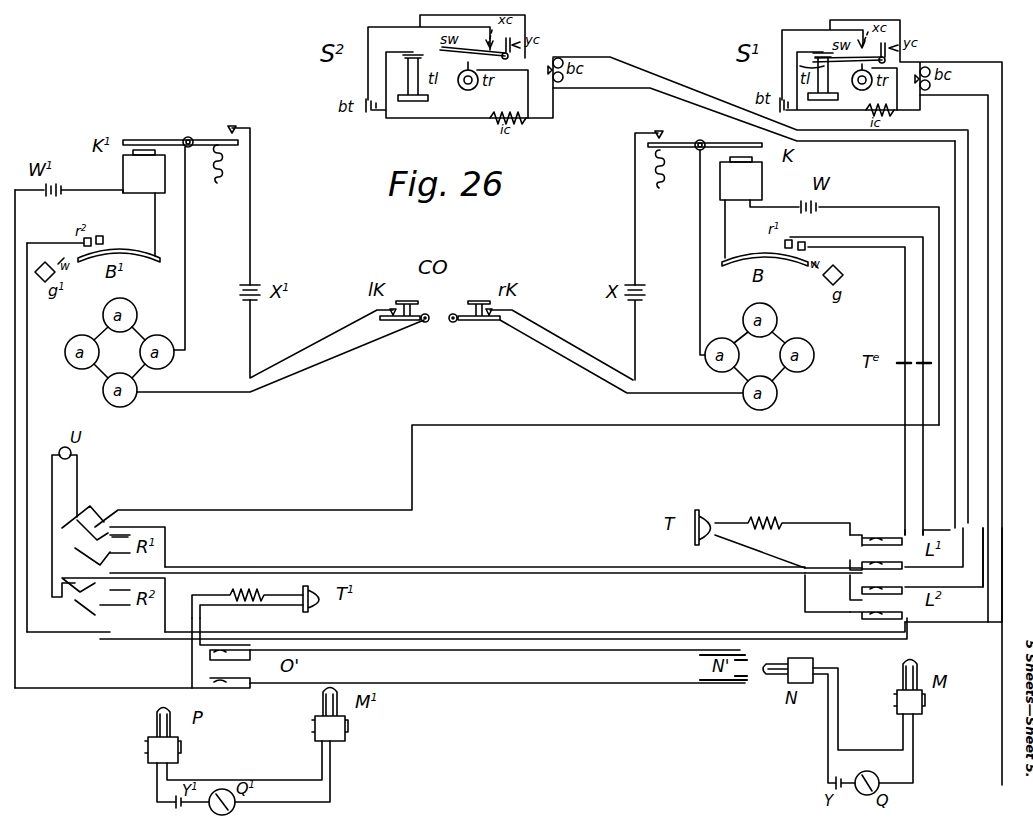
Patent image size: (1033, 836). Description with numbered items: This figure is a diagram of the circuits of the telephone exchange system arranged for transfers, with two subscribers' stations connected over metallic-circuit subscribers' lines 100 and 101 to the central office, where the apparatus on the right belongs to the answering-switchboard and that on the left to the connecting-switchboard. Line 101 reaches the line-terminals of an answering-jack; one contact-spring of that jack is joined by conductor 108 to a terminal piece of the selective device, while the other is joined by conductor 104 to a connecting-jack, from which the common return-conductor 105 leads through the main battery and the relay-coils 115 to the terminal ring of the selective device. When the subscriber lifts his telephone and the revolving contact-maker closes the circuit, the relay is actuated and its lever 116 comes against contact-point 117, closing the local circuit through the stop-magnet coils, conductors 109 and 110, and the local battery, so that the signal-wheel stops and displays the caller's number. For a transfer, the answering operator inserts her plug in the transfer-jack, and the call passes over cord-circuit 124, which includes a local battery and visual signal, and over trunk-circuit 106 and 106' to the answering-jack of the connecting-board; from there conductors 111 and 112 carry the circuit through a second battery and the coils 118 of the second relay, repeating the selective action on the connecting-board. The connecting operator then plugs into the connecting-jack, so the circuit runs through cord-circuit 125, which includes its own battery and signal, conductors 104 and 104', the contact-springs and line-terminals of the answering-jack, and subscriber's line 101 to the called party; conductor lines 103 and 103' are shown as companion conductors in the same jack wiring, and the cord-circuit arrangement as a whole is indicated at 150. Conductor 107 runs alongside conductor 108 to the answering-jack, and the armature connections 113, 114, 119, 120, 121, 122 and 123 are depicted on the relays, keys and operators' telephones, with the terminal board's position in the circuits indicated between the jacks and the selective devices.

The subscriber's line 100 is at (968, 357).
The subscriber's line 101 is at (988, 402).
The line wire 103 is at (485, 557).
The line wire 103' is at (457, 581).
The conductor 104 is at (535, 622).
The conductor 104' is at (503, 636).
The common return-conductor 105 is at (517, 466).
The trunk-circuit 106 is at (495, 657).
The trunk-circuit 106' is at (497, 684).
The line wire 107 is at (888, 502).
The conductor 108 is at (919, 504).
The conductor 109 is at (686, 252).
The conductor 110 is at (636, 247).
The conductor 111 is at (68, 631).
The conductor 112 is at (103, 679).
The wire from relay armature 113 is at (200, 238).
The wire through battery X1 114 is at (264, 326).
The relay-coils 115 is at (741, 178).
The relay lever 116 is at (705, 136).
The contact-point 117 is at (657, 199).
The relay coils 118 is at (144, 171).
The relay armature lever 119 is at (180, 133).
The armature contact and spring 120 is at (231, 195).
The resistance coil 121 is at (782, 542).
The resistance coil 122 is at (247, 603).
The relay frame wire 123 is at (67, 526).
The cord-circuit 124 is at (879, 731).
The cord-circuit 125 is at (262, 778).
The cord circuit 150 is at (75, 722).